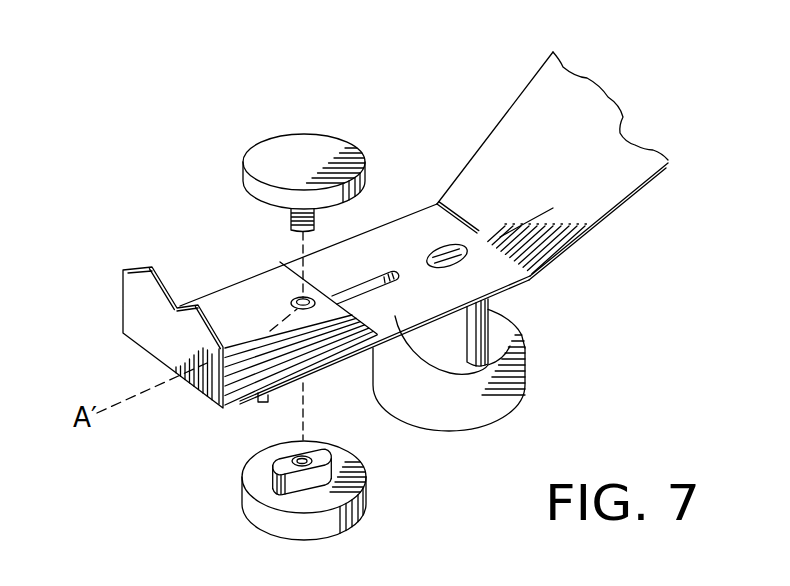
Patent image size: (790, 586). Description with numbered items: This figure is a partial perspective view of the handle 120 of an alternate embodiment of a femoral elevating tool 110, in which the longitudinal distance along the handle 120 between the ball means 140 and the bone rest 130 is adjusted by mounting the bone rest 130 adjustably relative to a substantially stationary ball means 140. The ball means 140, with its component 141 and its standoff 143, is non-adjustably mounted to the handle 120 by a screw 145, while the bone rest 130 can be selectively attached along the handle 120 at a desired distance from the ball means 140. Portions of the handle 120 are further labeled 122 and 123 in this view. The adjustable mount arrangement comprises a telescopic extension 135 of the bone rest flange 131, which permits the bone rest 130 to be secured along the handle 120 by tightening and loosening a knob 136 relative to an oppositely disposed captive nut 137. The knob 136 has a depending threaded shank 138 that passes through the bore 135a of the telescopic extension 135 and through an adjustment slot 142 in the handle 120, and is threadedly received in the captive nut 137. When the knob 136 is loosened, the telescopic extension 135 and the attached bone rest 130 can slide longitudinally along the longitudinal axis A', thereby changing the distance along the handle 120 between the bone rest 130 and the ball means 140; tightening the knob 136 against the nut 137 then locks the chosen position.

The femoral elevating tool 110 is at (363, 100).
The handle 120 is at (472, 128).
The base plate 122 is at (432, 360).
The edge flange 123 is at (612, 190).
The bone rest 130 is at (115, 291).
The bone rest flange 131 is at (163, 328).
The telescopic extension 135 is at (220, 292).
The bore 135a is at (298, 302).
The knob 136 is at (268, 152).
The captive nut 137 is at (250, 467).
The threaded stud 138 is at (290, 222).
The ball means 140 is at (514, 327).
The knob 141 is at (507, 397).
The adjustment slot 142 is at (377, 270).
The standoff 143 is at (432, 360).
The screw 145 is at (438, 248).